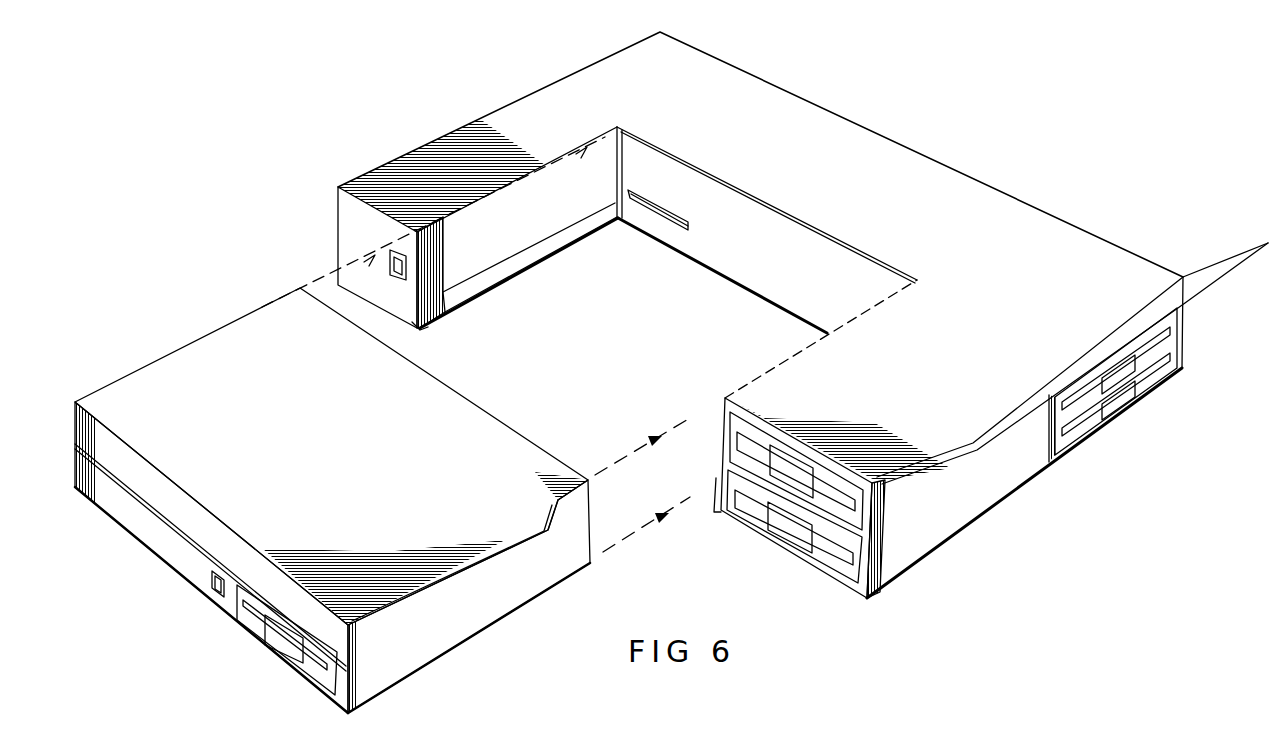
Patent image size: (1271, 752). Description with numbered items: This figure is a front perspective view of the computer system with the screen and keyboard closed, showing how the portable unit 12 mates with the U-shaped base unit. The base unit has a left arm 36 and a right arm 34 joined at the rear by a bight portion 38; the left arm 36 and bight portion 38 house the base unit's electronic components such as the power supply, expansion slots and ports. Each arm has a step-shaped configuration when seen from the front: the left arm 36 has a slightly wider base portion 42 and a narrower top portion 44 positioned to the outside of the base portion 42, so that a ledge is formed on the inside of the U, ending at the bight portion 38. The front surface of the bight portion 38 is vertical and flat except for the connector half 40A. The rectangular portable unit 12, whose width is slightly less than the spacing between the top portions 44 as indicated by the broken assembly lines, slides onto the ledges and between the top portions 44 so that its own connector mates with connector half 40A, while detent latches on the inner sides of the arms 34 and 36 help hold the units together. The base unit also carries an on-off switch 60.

The portable unit 12 is at (157, 281).
The right arm 34 is at (893, 457).
The left arm 36 is at (470, 135).
The bight portion 38 is at (1020, 215).
The connector half 40A is at (687, 227).
The base portion 42 is at (413, 329).
The top portion 44 is at (353, 222).
The on-off switch 60 is at (392, 270).